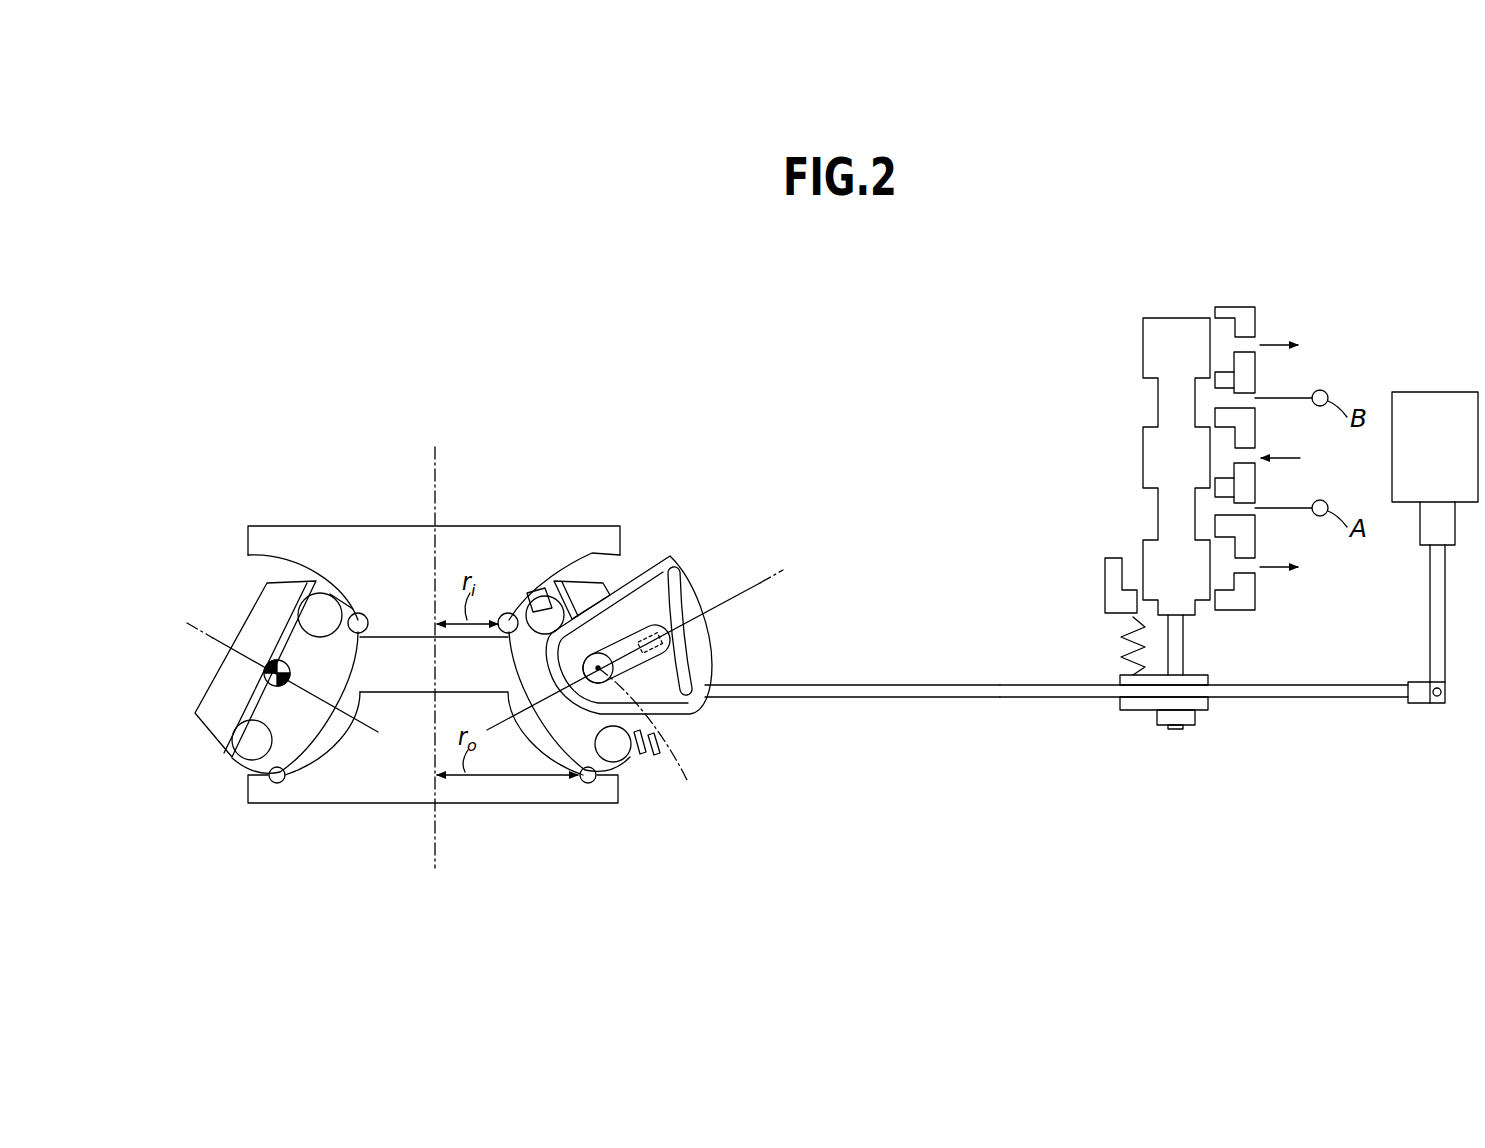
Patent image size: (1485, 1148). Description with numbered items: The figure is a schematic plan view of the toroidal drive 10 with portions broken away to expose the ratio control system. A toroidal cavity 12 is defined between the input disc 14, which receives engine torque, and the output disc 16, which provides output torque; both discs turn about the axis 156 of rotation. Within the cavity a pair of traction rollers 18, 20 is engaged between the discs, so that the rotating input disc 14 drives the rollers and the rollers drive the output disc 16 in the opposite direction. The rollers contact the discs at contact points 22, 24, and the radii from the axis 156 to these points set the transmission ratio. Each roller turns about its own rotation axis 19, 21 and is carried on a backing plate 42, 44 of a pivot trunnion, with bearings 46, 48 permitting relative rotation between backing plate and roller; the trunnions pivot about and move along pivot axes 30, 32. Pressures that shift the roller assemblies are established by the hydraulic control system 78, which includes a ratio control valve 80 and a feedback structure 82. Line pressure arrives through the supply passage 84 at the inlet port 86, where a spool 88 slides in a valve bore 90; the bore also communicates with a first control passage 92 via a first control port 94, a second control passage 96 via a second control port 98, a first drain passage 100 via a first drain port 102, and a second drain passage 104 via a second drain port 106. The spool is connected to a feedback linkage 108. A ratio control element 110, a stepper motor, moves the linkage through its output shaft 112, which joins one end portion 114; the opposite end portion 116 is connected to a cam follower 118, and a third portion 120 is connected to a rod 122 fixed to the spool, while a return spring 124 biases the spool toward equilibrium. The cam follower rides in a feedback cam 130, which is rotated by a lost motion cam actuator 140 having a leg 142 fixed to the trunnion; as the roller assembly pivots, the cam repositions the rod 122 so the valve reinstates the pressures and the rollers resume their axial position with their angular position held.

The toroidal drive 10 is at (692, 310).
The toroidal cavity 12 is at (587, 562).
The input disc 14 is at (473, 526).
The output disc 16 is at (533, 805).
The traction roller 18 is at (603, 793).
The rotation axis 19 is at (777, 590).
The traction roller 20 is at (303, 767).
The rotation axis 21 is at (197, 641).
The contact point 22 is at (362, 613).
The contact point 24 is at (270, 784).
The pivot axis 30 is at (650, 741).
The pivot axis 32 is at (228, 606).
The backing plate 42 is at (622, 582).
The backing plate 44 is at (258, 592).
The bearing 46 is at (540, 598).
The bearing 48 is at (332, 610).
The hydraulic control system 78 is at (1075, 377).
The ratio control valve 80 is at (1168, 317).
The feedback structure 82 is at (912, 642).
The supply passage 84 is at (1283, 458).
The inlet port 86 is at (1247, 457).
The spool 88 is at (1192, 474).
The valve bore 90 is at (1230, 322).
The first control passage 92 is at (1297, 497).
The first control port 94 is at (1260, 498).
The second control passage 96 is at (1293, 392).
The second control port 98 is at (1253, 393).
The first drain passage 100 is at (1277, 568).
The first drain port 102 is at (1243, 573).
The second drain passage 104 is at (1283, 345).
The second drain port 106 is at (1243, 345).
The feedback linkage 108 is at (980, 683).
The ratio control element 110 is at (1437, 398).
The output shaft 112 is at (1432, 585).
The one end portion 114 is at (1408, 680).
The opposite end portion 116 is at (730, 697).
The cam follower 118 is at (693, 675).
The third portion 120 is at (1152, 697).
The rod 122 is at (1184, 665).
The return spring 124 is at (1127, 643).
The feedback cam 130 is at (690, 558).
The lost motion cam actuator 140 is at (690, 728).
The leg 142 is at (627, 633).
The axis of rotation 156 is at (433, 463).